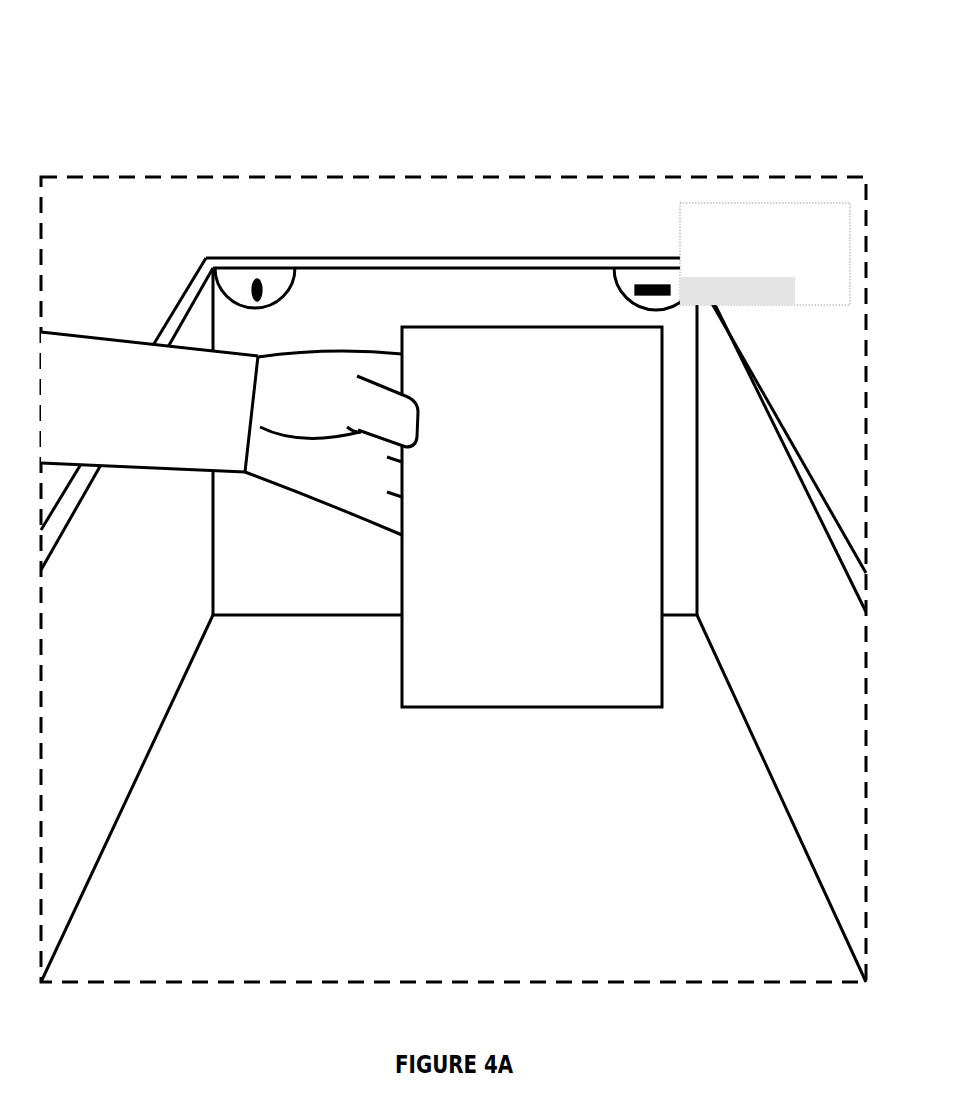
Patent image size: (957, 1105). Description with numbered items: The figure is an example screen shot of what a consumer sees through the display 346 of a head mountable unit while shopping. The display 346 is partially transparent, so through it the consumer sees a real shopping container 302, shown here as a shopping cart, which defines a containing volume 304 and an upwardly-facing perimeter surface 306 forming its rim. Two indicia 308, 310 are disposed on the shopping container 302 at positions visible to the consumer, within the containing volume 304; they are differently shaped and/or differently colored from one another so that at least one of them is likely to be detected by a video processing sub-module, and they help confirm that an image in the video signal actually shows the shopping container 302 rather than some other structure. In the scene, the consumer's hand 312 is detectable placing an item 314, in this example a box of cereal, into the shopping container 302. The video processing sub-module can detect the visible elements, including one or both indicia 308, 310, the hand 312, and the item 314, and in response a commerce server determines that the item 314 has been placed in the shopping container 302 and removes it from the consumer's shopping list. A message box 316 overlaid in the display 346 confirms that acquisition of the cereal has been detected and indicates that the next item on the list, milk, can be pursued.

The shopping container 302 is at (465, 222).
The containing volume 304 is at (453, 798).
The upwardly-facing perimeter surface 306 is at (173, 320).
The indicia 308 is at (263, 290).
The indicia 310 is at (637, 287).
The consumer's hand 312 is at (327, 473).
The item 314 is at (532, 517).
The message box 316 is at (765, 203).
The display 346 is at (213, 175).